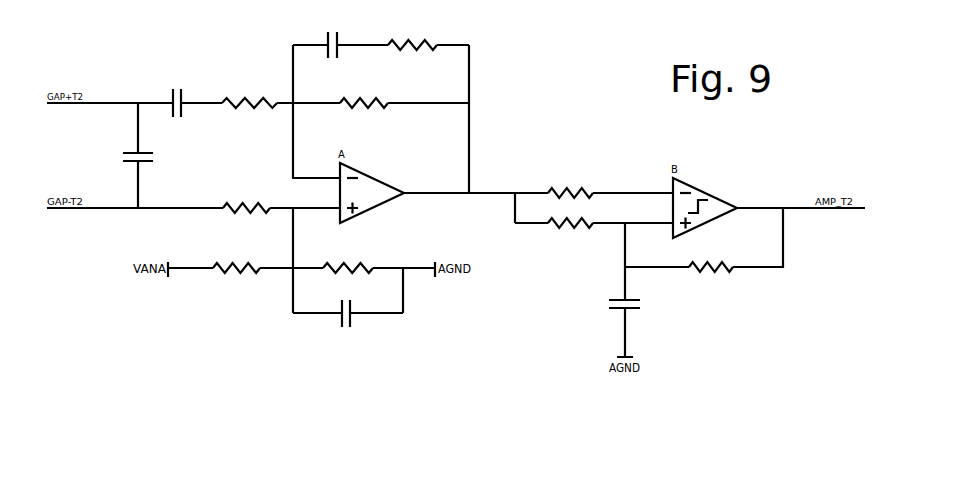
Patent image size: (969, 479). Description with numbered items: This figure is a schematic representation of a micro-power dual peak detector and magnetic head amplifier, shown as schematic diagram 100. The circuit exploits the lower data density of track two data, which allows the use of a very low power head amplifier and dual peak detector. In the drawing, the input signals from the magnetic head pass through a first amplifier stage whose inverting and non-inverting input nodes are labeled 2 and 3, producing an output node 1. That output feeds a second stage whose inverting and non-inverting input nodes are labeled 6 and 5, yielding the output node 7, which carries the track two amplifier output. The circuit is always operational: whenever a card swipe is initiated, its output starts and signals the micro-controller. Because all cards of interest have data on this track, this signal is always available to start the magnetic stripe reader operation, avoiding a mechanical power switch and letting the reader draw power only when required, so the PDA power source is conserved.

The micro-power dual peak detector and magnetic head amplifier schematic diagram 100 is at (577, 88).
The op-amp A output node 1 is at (459, 185).
The op-amp A inverting input node 2 is at (316, 111).
The op-amp A non-inverting input node 3 is at (193, 203).
The op-amp B non-inverting input node 5 is at (594, 219).
The op-amp B inverting input node 6 is at (594, 201).
The op-amp B output node 7 is at (801, 200).